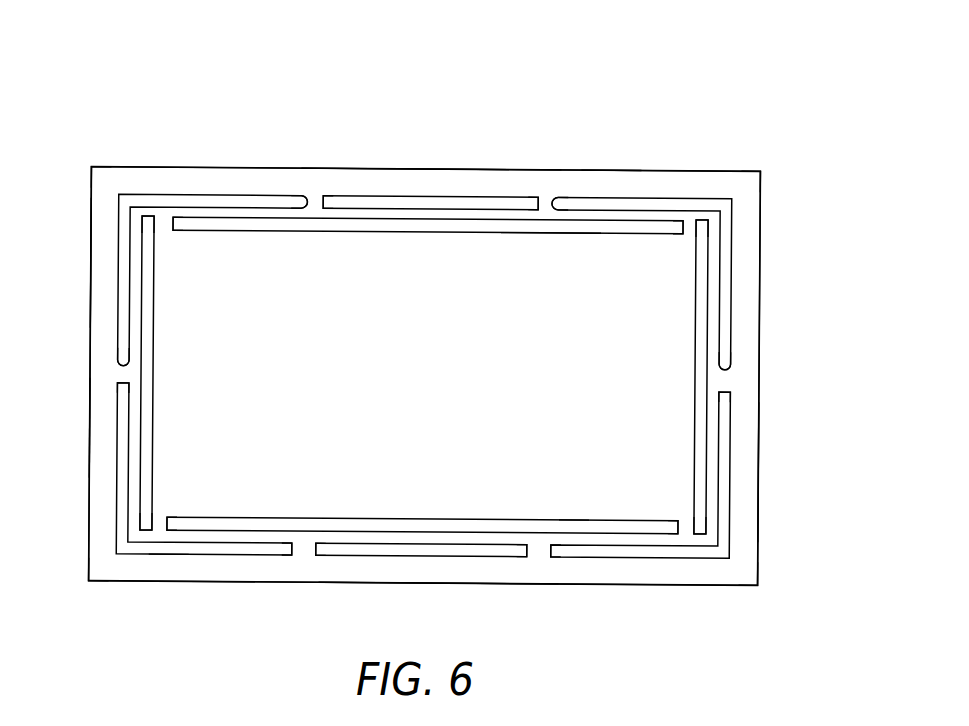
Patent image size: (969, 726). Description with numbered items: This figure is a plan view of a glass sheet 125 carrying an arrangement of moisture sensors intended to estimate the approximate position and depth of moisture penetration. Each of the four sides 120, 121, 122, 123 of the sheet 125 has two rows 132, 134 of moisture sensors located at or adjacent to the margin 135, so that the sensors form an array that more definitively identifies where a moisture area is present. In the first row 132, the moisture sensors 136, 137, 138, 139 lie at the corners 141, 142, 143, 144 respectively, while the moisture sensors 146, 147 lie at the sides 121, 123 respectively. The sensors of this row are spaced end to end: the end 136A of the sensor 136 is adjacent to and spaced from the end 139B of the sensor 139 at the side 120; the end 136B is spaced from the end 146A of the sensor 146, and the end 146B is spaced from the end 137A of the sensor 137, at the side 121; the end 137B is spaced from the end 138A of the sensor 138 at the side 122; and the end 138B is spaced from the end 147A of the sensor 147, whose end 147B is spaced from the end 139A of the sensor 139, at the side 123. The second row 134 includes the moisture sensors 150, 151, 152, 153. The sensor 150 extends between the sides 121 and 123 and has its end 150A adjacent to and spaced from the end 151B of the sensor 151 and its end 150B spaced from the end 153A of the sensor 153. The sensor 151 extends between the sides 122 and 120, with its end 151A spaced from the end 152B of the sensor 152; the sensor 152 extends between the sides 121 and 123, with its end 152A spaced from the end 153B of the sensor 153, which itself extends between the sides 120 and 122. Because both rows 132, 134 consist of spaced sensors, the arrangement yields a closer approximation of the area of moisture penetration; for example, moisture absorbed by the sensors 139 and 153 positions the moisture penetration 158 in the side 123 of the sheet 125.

The side 120 is at (761, 243).
The side 121 is at (416, 169).
The side 122 is at (90, 398).
The side 123 is at (470, 584).
The glass sheet 125 is at (724, 125).
The first row 132 is at (168, 568).
The second row 134 is at (547, 246).
The margin 135 is at (92, 262).
The moisture sensor 136 is at (665, 197).
The end 136A is at (726, 367).
The end 136B is at (558, 205).
The moisture sensor 137 is at (184, 196).
The end 137A is at (300, 203).
The end 137B is at (116, 368).
The moisture sensor 138 is at (606, 169).
The end 138A is at (130, 386).
The end 138B is at (286, 558).
The moisture sensor 139 is at (630, 558).
The end 139A is at (551, 546).
The end 139B is at (728, 389).
The corner 141 is at (762, 170).
The corner 142 is at (90, 167).
The corner 143 is at (88, 582).
The corner 144 is at (758, 585).
The moisture sensor 146 is at (470, 205).
The end 146A is at (537, 203).
The end 146B is at (322, 203).
The moisture sensor 147 is at (414, 558).
The end 147A is at (325, 545).
The end 147B is at (520, 558).
The moisture sensor 150 is at (156, 325).
The end 150A is at (151, 226).
The end 150B is at (154, 520).
The moisture sensor 151 is at (387, 233).
The end 151A is at (681, 229).
The end 151B is at (185, 229).
The moisture sensor 152 is at (695, 392).
The end 152A is at (698, 526).
The end 152B is at (702, 234).
The moisture sensor 153 is at (400, 519).
The end 153A is at (183, 522).
The end 153B is at (672, 524).
The moisture penetration 158 is at (573, 518).